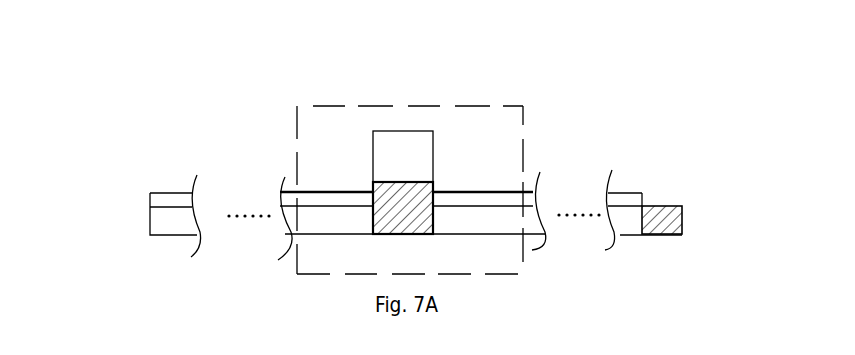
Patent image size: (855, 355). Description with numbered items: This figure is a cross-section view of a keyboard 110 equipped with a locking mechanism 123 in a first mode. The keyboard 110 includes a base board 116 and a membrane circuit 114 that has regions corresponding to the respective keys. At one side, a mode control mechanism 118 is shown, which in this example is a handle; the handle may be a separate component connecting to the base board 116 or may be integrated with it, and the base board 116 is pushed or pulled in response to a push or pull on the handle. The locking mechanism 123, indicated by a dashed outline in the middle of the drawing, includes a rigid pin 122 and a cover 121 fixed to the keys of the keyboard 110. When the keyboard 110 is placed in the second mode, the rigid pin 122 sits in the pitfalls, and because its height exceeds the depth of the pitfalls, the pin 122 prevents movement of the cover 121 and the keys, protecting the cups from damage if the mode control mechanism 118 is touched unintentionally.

The keyboard 110 is at (190, 56).
The membrane circuit 114 is at (168, 200).
The base board 116 is at (158, 235).
The mode control mechanism 118 is at (667, 205).
The cover 121 is at (412, 132).
The rigid pin 122 is at (418, 198).
The locking mechanism 123 is at (313, 107).